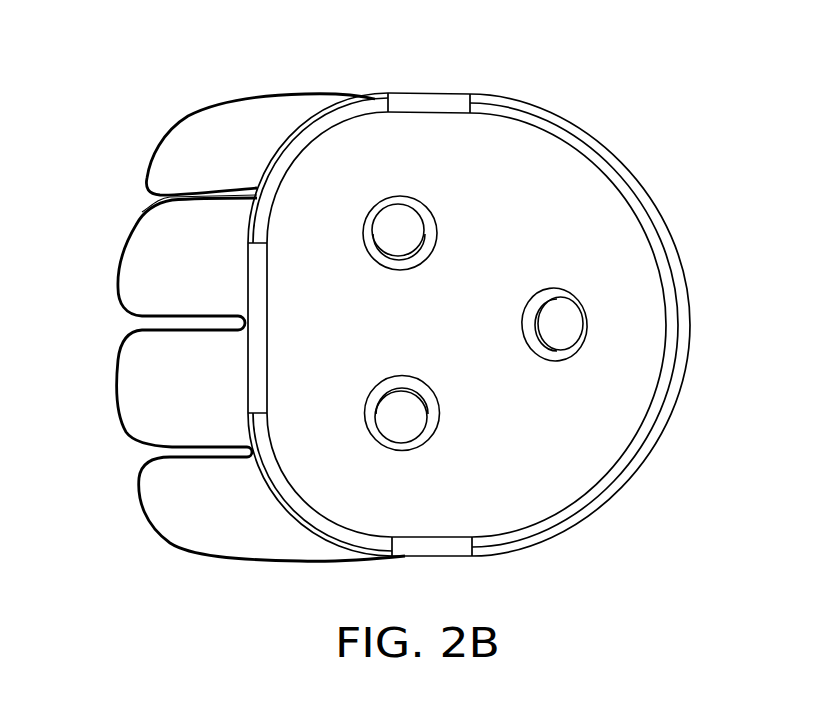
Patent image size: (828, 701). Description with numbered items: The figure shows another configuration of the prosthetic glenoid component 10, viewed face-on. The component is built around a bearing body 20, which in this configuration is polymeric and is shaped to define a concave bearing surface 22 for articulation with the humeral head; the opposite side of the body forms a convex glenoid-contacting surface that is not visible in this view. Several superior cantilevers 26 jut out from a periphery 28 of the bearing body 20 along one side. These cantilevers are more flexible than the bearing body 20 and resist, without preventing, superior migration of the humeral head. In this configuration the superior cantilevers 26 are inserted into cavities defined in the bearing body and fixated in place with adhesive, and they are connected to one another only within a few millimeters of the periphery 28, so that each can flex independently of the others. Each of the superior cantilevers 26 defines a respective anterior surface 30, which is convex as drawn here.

The prosthetic glenoid component 10 is at (243, 72).
The bearing body 20 is at (657, 175).
The concave bearing surface 22 is at (557, 463).
The superior cantilevers 26 is at (185, 117).
The periphery 28 is at (142, 212).
The anterior surfaces 30 is at (183, 163).